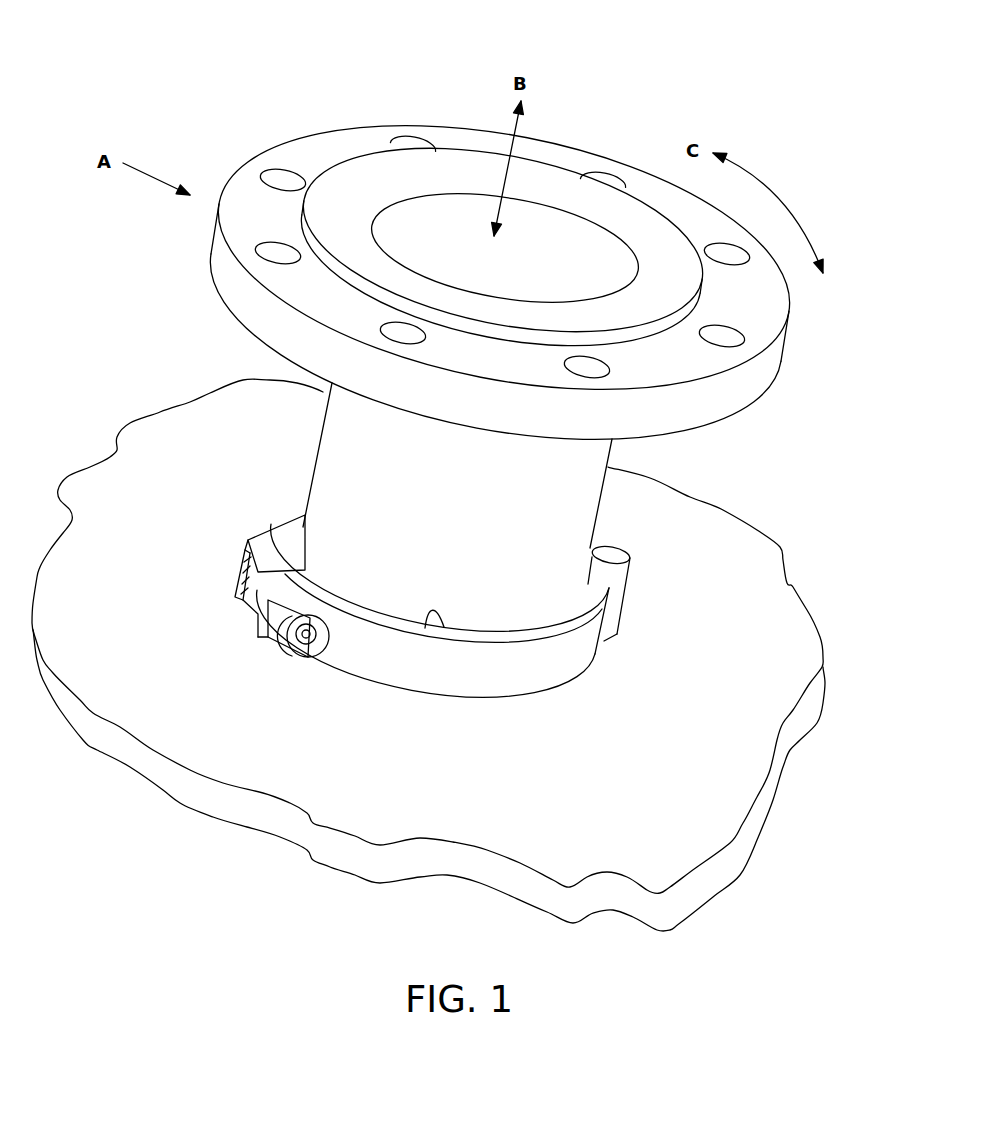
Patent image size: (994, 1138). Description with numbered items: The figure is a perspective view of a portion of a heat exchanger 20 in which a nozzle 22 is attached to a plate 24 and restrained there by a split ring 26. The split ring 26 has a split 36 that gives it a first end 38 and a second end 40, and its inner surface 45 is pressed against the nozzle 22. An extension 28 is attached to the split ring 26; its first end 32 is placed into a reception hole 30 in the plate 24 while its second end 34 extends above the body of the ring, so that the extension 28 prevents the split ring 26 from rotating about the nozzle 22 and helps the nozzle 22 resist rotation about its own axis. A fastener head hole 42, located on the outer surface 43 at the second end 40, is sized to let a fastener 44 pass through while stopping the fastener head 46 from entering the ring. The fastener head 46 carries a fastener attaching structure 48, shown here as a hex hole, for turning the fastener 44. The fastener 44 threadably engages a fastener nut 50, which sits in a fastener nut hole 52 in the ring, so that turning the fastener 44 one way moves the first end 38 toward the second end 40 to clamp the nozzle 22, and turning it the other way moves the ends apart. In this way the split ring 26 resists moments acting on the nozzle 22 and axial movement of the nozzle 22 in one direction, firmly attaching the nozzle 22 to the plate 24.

The heat exchanger 20 is at (663, 76).
The nozzle 22 is at (577, 463).
The plate 24 is at (672, 822).
The split ring 26 is at (532, 680).
The extension 28 is at (621, 590).
The reception hole 30 is at (613, 645).
The first end 32 is at (617, 633).
The second end 34 is at (631, 556).
The split 36 is at (243, 613).
The first end 38 is at (258, 538).
The second end 40 is at (260, 636).
The fastener head hole 42 is at (280, 643).
The outer surface 43 is at (478, 688).
The fastener 44 is at (267, 640).
The inner surface 45 is at (427, 612).
The fastener head 46 is at (298, 645).
The fastener attaching structure 48 is at (332, 636).
The fastener nut 50 is at (238, 572).
The fastener nut hole 52 is at (232, 546).